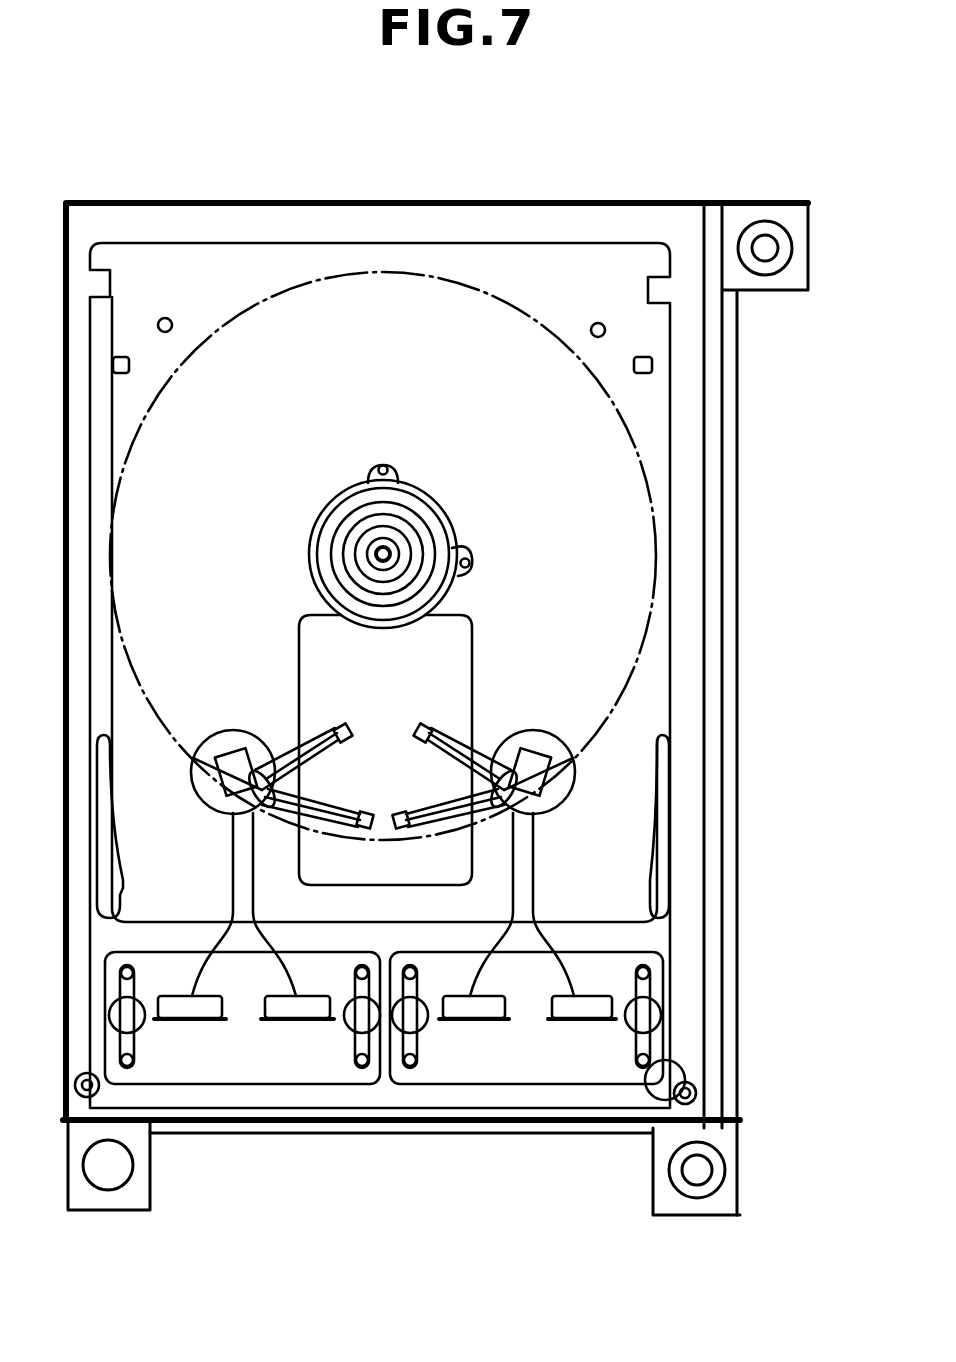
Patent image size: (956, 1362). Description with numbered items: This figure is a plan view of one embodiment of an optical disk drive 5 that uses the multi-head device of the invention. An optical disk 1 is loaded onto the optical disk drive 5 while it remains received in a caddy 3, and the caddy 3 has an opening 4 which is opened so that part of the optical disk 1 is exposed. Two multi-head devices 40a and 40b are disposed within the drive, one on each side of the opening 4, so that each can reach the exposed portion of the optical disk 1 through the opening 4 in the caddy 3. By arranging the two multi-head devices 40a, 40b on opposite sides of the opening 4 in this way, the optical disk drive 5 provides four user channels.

The optical disk 1 is at (645, 480).
The caddy 3 is at (672, 693).
The opening 4 is at (466, 701).
The optical disk drive 5 is at (738, 912).
The multi-head device 40a is at (237, 729).
The multi-head device 40b is at (570, 804).